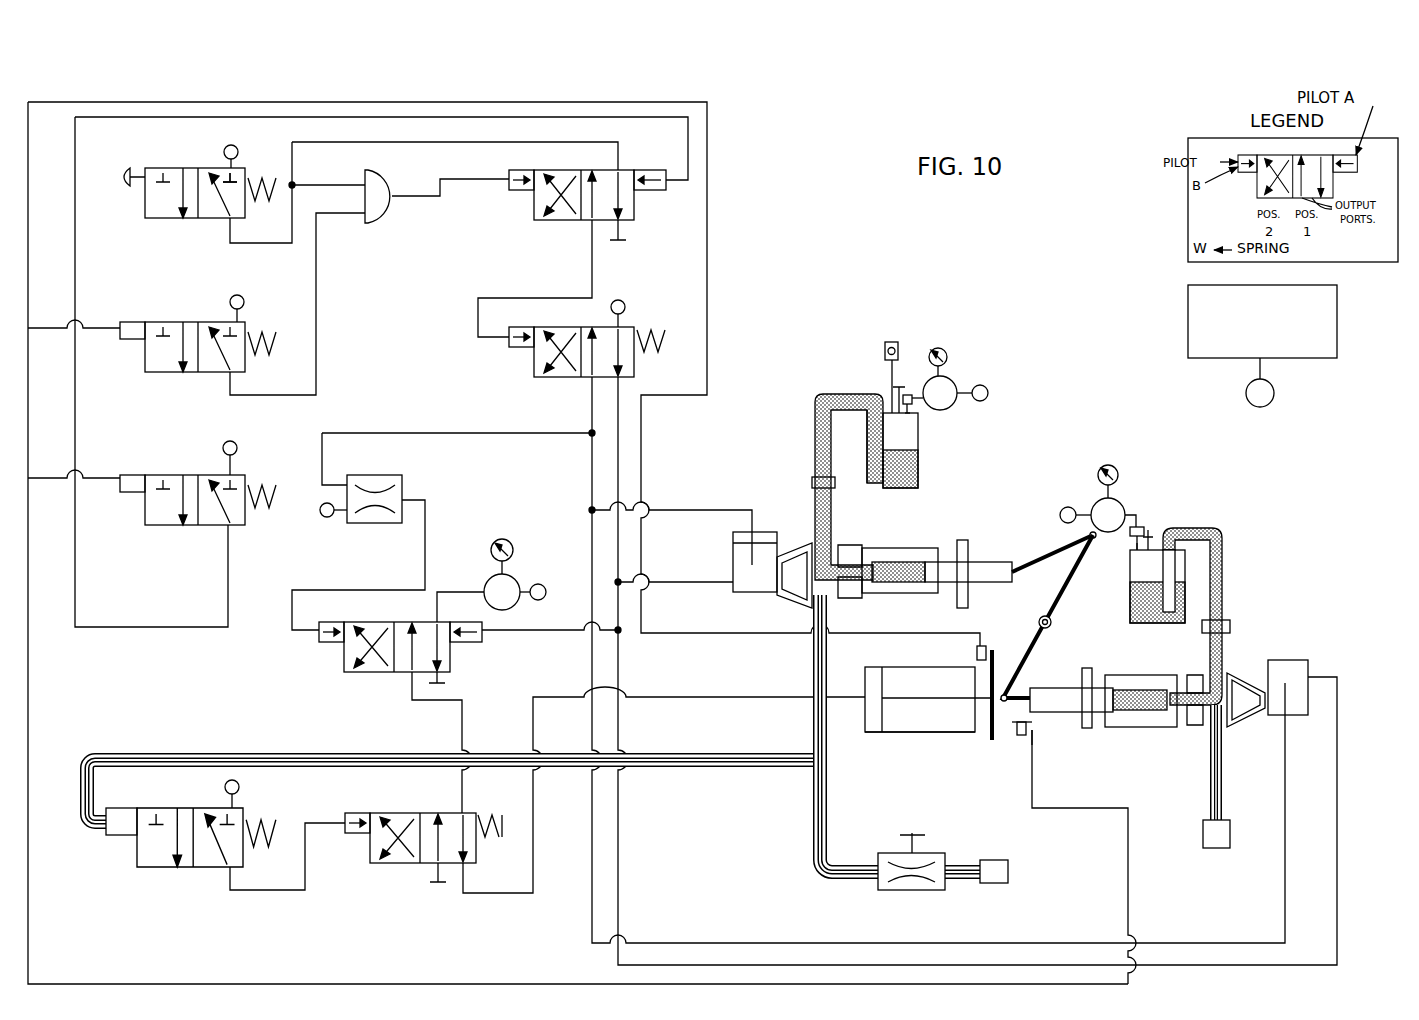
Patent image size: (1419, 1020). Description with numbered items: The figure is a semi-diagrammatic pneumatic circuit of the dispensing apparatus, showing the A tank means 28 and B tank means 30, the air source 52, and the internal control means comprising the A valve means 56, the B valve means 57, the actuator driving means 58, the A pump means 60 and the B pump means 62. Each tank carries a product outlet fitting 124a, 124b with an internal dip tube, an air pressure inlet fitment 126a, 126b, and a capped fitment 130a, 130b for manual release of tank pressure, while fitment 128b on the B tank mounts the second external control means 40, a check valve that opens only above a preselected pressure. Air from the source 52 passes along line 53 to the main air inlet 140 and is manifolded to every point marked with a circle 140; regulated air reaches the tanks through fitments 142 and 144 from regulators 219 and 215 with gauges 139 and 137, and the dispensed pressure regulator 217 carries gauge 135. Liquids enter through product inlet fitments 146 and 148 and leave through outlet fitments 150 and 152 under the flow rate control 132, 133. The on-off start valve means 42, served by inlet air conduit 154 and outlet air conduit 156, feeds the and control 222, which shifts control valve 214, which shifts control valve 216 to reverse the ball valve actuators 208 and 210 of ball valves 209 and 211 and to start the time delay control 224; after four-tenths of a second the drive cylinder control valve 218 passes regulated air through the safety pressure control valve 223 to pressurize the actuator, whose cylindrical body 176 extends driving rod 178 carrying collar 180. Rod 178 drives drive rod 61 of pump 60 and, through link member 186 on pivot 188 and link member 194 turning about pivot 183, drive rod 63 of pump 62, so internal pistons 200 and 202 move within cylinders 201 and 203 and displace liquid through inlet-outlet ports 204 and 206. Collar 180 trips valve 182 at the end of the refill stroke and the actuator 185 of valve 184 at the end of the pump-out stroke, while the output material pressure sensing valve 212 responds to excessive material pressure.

The A tank means 28 is at (1195, 592).
The B tank means 30 is at (920, 468).
The second external control means 40 is at (900, 338).
The third external control means 42 is at (138, 184).
The air source 52 is at (1340, 322).
The air supply line 53 is at (1264, 372).
The A valve means 56 is at (1242, 672).
The B valve means 57 is at (850, 553).
The actuator driving means 58 is at (938, 740).
The A pump means 60 is at (1155, 730).
The drive rod 61 is at (1062, 712).
The B pump means 62 is at (912, 546).
The B pump rod 63 is at (988, 582).
The product outlet fitting 124a is at (1185, 537).
The product outlet fitting 124b is at (866, 410).
The air pressure inlet fitment 126a is at (1134, 545).
The air pressure inlet fitment 126b is at (910, 418).
The fitment 128b is at (882, 396).
The fitment 130a is at (1160, 535).
The fitment 130b is at (902, 383).
The flow rate control 132 is at (913, 835).
The flow rate control 133 is at (911, 890).
The pressure gauge 135 is at (512, 541).
The pressure gauge 137 is at (949, 355).
The pressure gauge 139 is at (1118, 468).
The main air inlet fitment 140 is at (252, 145).
The quick connect-disconnect fitment 142 is at (1150, 525).
The quick connect-disconnect fitment 144 is at (912, 402).
The product inlet fitment 146 is at (812, 482).
The product inlet fitment 148 is at (1232, 624).
The outlet fitment 150 is at (1220, 850).
The outlet fitment 152 is at (1005, 882).
The inlet air conduit 154 is at (236, 170).
The outlet air conduit 156 is at (250, 242).
The cylindrical body 176 is at (893, 733).
The driving rod 178 is at (962, 703).
The collar 180 is at (985, 745).
The mechanically actuated pneumatic valve 182 is at (170, 318).
The pivot 183 is at (1039, 624).
The mechanically actuated pneumatic valve 184 is at (166, 526).
The actuator 185 is at (1018, 738).
The link member 186 is at (1068, 588).
The pivot 188 is at (1052, 625).
The link member 194 is at (1042, 560).
The internal piston 200 is at (1097, 682).
The cylinder 201 is at (1137, 690).
The internal piston 202 is at (968, 570).
The cylinder 203 is at (885, 590).
The inlet and outlet port 204 is at (1190, 725).
The inlet and outlet 206 is at (846, 598).
The air driven actuator means 208 is at (1310, 668).
The ball valve 209 is at (1224, 728).
The valve actuator 210 is at (755, 594).
The valve 211 is at (802, 550).
The output material pressure sensing valve 212 is at (192, 868).
The control valve 214 is at (570, 226).
The pressure regulator 215 is at (958, 382).
The control valve 216 is at (570, 378).
The dispensed pressure regulator 217 is at (513, 600).
The drive cylinder control valve 218 is at (383, 676).
The pressure regulator 219 is at (1127, 505).
The and control 222 is at (388, 180).
The safety pressure control valve 223 is at (397, 872).
The time delay control 224 is at (402, 524).